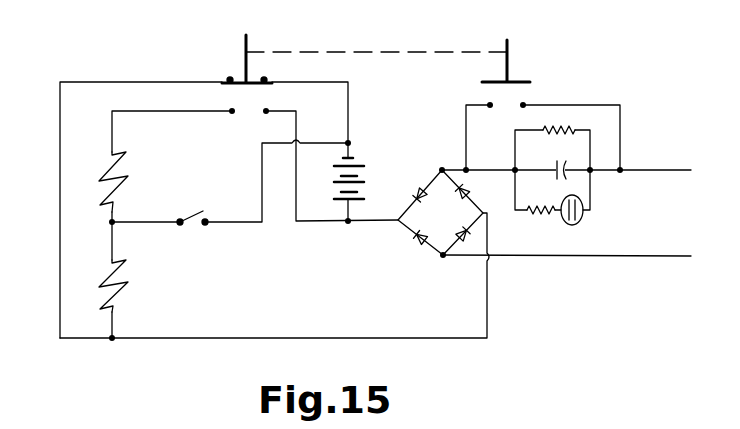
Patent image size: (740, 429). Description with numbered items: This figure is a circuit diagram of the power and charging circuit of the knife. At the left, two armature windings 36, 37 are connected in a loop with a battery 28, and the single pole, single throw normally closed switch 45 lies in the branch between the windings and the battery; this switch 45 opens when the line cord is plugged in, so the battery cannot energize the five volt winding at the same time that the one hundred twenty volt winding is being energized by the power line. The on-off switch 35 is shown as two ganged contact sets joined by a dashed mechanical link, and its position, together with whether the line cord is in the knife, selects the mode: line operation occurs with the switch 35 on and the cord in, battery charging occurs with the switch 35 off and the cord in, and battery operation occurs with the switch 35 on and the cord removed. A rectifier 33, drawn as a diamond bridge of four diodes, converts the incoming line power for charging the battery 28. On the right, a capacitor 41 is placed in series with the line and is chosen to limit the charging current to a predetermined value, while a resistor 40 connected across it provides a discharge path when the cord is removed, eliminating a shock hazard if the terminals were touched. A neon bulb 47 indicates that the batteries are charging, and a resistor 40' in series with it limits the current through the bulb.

The battery 28 is at (358, 165).
The rectifier 33 is at (435, 252).
The on-off switch 35 is at (355, 52).
The armature winding 36 is at (100, 174).
The armature winding 37 is at (100, 284).
The resistor 40 is at (564, 121).
The resistor 40' is at (534, 211).
The capacitor 41 is at (568, 165).
The single pole, single throw normally closed switch 45 is at (190, 226).
The neon bulb 47 is at (585, 213).